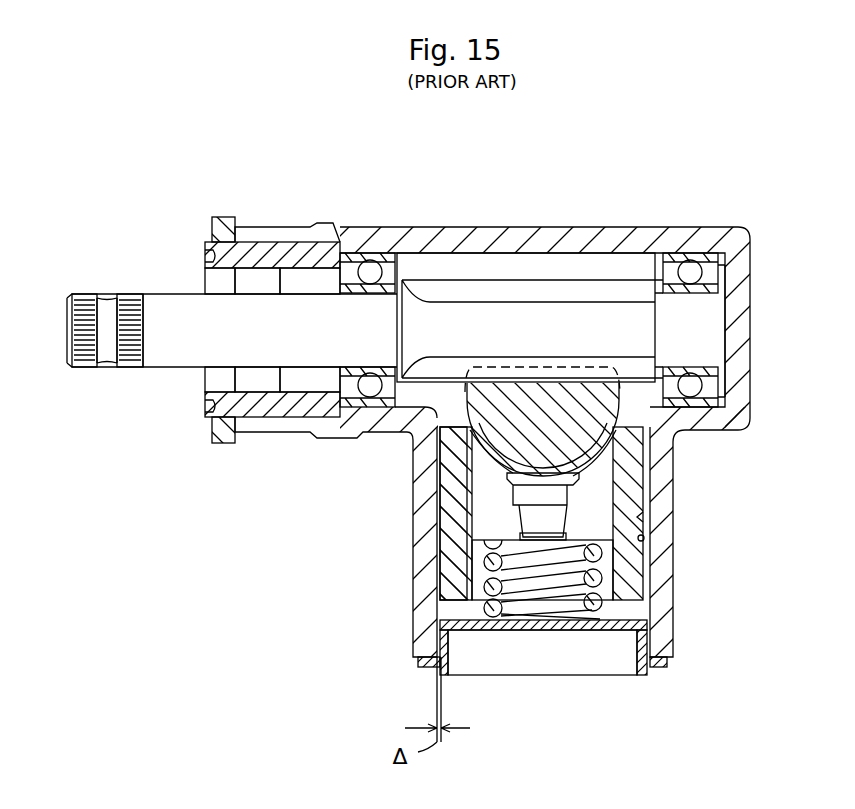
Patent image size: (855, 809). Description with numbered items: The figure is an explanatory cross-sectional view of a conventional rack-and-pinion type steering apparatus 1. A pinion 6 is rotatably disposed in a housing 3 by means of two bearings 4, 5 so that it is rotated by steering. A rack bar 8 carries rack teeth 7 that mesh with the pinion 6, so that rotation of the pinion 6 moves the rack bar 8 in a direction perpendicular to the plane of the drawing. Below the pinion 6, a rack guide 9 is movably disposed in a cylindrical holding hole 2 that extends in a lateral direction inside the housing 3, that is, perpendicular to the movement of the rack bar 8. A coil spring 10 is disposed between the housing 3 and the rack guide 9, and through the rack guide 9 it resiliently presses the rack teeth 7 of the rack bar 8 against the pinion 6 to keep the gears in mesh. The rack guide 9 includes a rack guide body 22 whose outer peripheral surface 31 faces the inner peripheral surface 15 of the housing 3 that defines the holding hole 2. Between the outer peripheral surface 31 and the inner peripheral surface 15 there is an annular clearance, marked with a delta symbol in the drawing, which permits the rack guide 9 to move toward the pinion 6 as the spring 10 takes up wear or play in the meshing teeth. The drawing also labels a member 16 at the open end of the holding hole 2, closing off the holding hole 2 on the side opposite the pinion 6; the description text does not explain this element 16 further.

The rack-and-pinion type steering apparatus 1 is at (234, 206).
The cylindrical holding hole 2 is at (640, 612).
The housing 3 is at (580, 233).
The bearing 4 is at (341, 252).
The bearing 5 is at (690, 252).
The pinion 6 is at (532, 312).
The rack teeth 7 is at (540, 370).
The rack bar 8 is at (498, 440).
The rack guide 9 is at (648, 519).
The coil spring 10 is at (478, 565).
The inner peripheral surface 15 is at (644, 540).
The cap 16 is at (540, 630).
The rack guide body 22 is at (628, 490).
The outer peripheral surface 31 is at (455, 512).